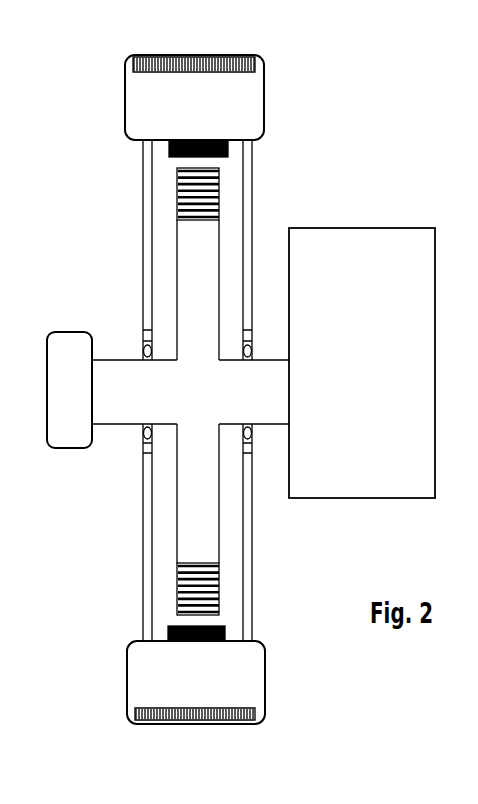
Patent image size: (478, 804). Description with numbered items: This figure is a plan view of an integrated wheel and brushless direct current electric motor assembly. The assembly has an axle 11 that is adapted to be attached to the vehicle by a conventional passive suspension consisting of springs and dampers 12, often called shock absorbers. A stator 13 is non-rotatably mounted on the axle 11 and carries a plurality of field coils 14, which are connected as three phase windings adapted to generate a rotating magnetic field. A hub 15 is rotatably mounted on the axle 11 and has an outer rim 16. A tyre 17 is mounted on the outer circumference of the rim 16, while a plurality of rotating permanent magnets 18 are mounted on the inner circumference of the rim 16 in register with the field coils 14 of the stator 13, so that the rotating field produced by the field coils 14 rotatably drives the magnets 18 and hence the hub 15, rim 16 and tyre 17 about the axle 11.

The axle 11 is at (116, 430).
The springs and dampers 12 is at (394, 220).
The stator 13 is at (189, 523).
The field coils 14 is at (174, 197).
The hub 15 is at (259, 186).
The outer rim 16 is at (265, 639).
The tyre 17 is at (274, 709).
The rotating permanent magnets 18 is at (223, 617).